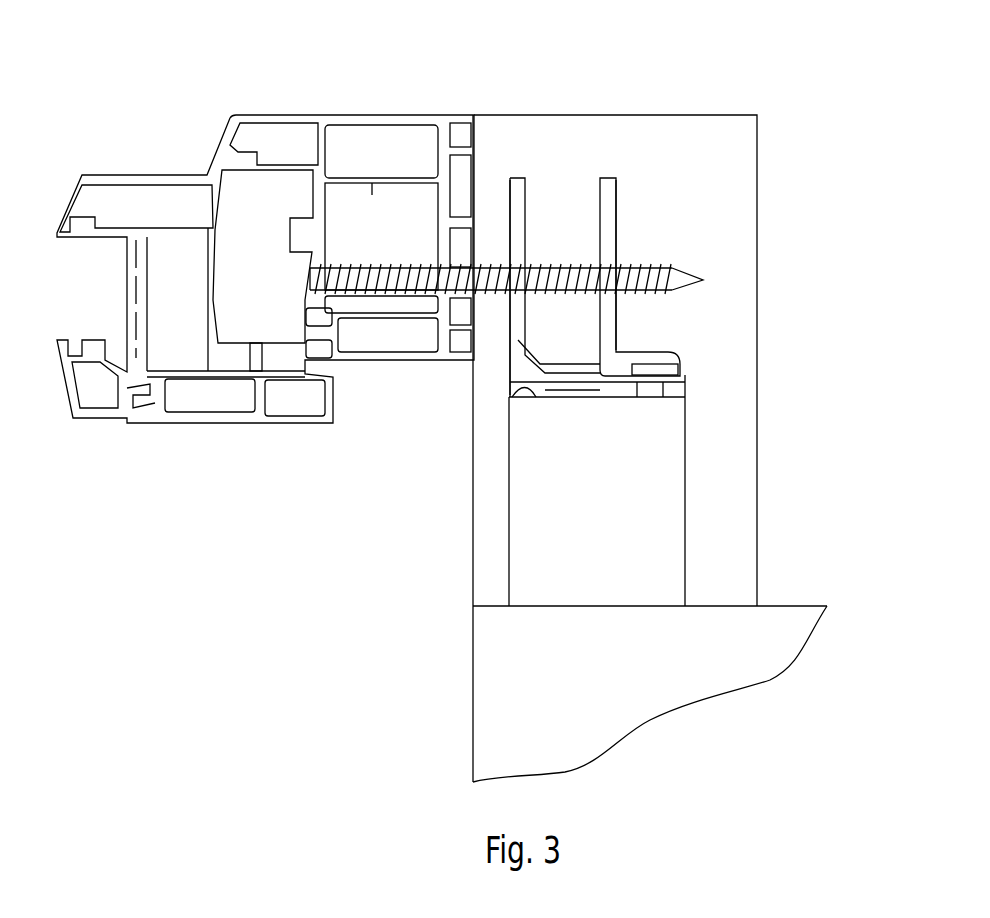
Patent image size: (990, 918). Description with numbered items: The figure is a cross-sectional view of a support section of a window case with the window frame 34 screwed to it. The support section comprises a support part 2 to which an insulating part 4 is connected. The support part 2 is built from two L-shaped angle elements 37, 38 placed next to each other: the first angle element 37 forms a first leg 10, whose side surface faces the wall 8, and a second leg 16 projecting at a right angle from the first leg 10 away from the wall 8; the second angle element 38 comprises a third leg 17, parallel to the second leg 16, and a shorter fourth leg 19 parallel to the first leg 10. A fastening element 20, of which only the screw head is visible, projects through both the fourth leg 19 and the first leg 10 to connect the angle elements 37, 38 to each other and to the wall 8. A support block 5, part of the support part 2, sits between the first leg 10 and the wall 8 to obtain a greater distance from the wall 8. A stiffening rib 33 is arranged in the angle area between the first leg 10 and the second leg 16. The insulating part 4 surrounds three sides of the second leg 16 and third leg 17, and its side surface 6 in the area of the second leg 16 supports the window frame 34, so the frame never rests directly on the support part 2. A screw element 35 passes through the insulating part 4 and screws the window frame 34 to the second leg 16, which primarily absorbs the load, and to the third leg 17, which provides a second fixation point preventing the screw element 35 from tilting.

The support part 2 is at (618, 376).
The insulating part 4 is at (720, 178).
The support block 5 is at (648, 477).
The side surface 6 is at (472, 470).
The wall 8 is at (690, 687).
The first leg 10 is at (575, 390).
The second leg 16 is at (510, 206).
The third leg 17 is at (607, 238).
The fourth leg 19 is at (680, 380).
The fastening element 20 is at (660, 368).
The stiffening rib 33 is at (533, 375).
The window frame 34 is at (203, 172).
The screw element 35 is at (688, 285).
The first angle element 37 is at (513, 185).
The second angle element 38 is at (606, 185).